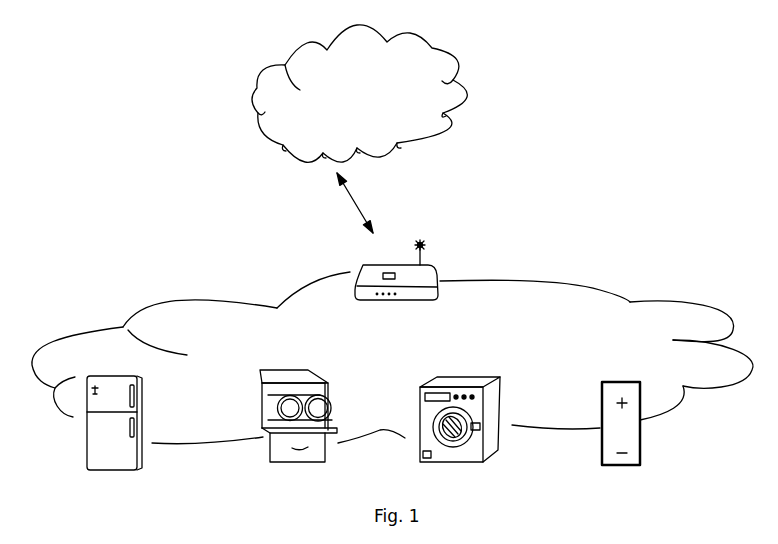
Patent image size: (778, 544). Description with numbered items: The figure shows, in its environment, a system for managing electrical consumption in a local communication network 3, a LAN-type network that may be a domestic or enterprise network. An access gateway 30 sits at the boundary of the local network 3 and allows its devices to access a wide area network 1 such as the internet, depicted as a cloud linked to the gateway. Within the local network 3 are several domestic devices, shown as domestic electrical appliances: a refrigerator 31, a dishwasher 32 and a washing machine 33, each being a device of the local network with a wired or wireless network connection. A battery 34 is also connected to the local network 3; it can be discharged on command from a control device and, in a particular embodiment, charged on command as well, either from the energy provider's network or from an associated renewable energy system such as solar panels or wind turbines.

The wide area network 1 is at (263, 124).
The local communication network 3 is at (160, 300).
The access gateway 30 is at (432, 268).
The refrigerator 31 is at (142, 407).
The dishwasher 32 is at (323, 388).
The washing machine 33 is at (500, 388).
The battery 34 is at (641, 384).